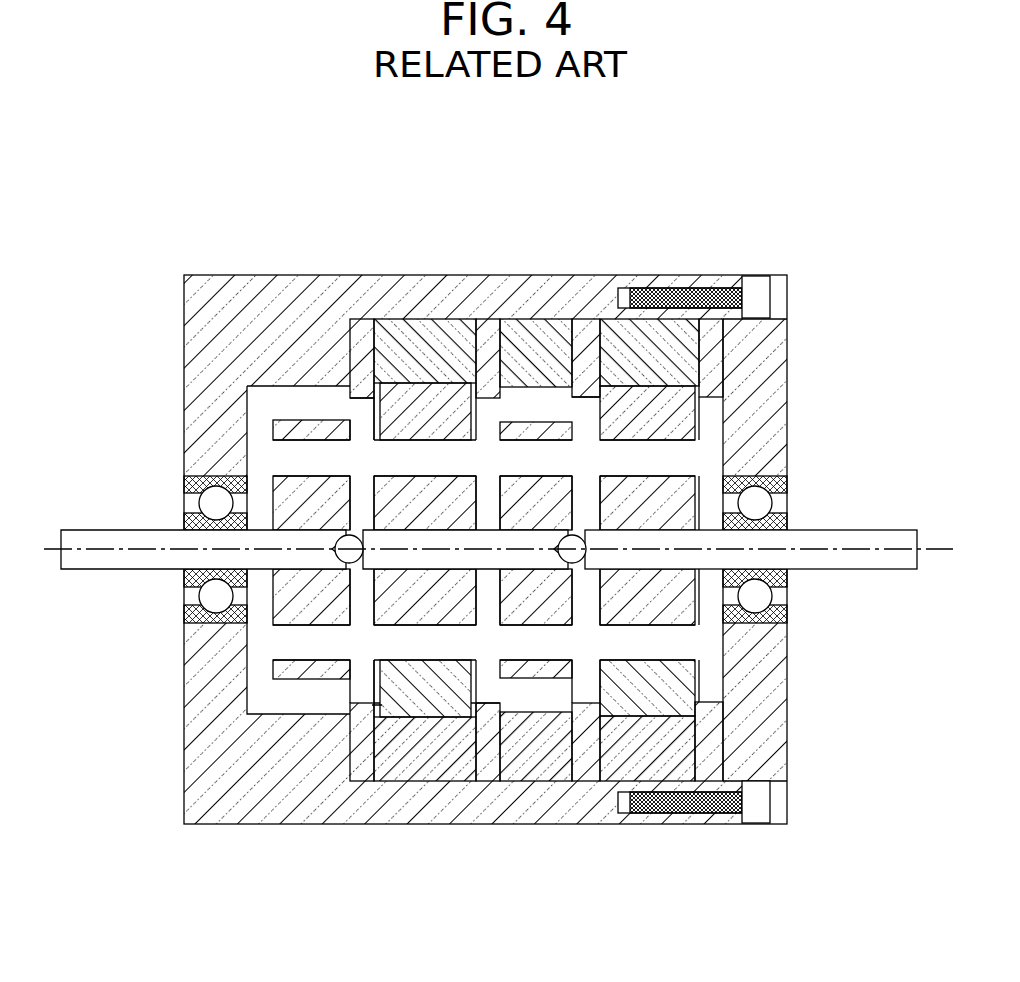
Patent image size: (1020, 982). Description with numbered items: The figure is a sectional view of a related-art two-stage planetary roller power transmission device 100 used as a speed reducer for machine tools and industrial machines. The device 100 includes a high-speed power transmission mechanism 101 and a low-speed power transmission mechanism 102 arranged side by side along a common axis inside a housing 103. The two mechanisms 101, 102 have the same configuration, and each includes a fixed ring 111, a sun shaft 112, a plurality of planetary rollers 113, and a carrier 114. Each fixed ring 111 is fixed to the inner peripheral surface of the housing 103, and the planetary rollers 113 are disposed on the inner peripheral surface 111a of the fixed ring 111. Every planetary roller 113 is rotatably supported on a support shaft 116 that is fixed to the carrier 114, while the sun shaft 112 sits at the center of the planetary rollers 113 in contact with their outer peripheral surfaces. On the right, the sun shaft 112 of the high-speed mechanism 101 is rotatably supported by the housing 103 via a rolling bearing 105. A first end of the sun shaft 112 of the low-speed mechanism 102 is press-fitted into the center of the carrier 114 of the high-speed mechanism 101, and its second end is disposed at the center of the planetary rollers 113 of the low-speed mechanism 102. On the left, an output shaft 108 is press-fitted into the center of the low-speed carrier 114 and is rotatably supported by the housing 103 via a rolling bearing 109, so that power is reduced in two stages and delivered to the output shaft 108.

The two-stage planetary roller power transmission device 100 is at (772, 230).
The high-speed power transmission mechanism 101 is at (566, 404).
The low-speed power transmission mechanism 102 is at (337, 392).
The housing 103 is at (205, 338).
The rolling bearing 105 is at (799, 501).
The output shaft 108 is at (80, 562).
The rolling bearing 109 is at (170, 500).
The fixed ring 111 is at (453, 760).
The inner peripheral surface 111a is at (426, 704).
The sun shaft 112 is at (900, 537).
The planetary roller 113 is at (358, 897).
The carrier 114 is at (293, 670).
The support shaft 116 is at (290, 453).